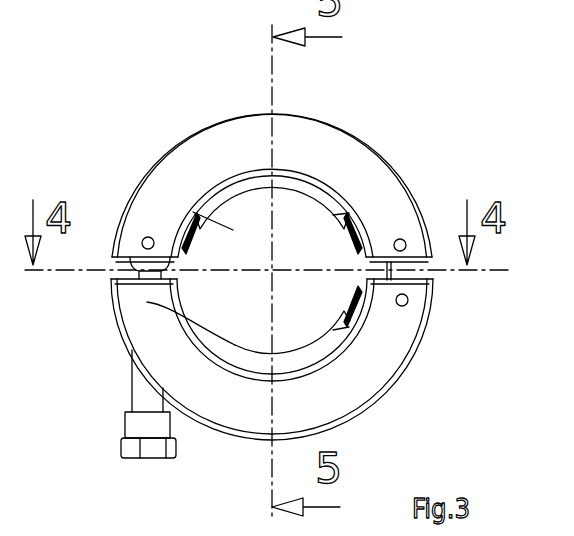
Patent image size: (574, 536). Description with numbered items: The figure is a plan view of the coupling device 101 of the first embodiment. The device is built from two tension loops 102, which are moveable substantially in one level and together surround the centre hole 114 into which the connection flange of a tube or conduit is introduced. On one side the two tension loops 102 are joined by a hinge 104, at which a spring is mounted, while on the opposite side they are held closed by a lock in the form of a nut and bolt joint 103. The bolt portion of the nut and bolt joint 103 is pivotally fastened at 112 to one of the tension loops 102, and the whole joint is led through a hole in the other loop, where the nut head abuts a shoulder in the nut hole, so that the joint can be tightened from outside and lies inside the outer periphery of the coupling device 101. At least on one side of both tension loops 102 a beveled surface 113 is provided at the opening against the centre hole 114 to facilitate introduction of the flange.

The coupling device 101 is at (423, 164).
The tension loops 102 is at (340, 150).
The nut and bolt joint 103 is at (148, 398).
The hinge 104 is at (433, 273).
The pivotal fastening point 112 is at (148, 237).
The beveled surface 113 is at (232, 186).
The centre hole 114 is at (233, 230).